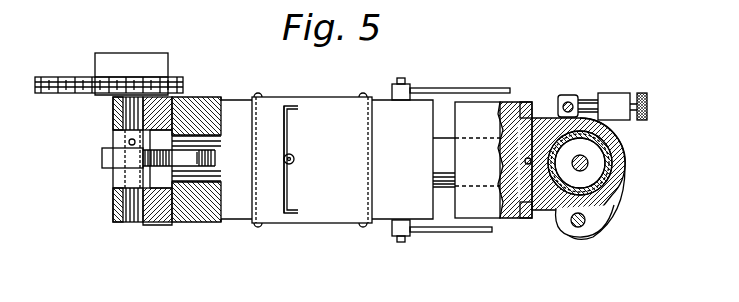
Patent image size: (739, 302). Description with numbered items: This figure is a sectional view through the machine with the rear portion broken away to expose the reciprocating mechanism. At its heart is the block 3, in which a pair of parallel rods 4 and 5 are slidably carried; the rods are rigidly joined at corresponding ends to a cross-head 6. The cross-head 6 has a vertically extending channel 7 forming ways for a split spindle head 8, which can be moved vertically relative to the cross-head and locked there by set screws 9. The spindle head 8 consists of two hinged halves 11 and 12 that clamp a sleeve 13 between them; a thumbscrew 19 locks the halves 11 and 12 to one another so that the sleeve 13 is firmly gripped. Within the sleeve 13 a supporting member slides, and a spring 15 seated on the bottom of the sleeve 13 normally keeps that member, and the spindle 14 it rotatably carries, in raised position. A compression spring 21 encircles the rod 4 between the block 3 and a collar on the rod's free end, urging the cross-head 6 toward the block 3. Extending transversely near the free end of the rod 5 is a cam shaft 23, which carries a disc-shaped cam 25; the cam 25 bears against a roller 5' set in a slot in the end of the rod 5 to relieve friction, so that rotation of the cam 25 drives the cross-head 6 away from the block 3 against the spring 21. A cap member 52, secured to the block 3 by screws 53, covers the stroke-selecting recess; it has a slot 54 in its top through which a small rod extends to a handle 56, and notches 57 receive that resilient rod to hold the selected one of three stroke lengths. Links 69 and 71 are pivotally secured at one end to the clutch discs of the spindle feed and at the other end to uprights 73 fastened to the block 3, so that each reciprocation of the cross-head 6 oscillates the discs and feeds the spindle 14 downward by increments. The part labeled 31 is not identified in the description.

The block 3 is at (230, 212).
The rod 4 is at (443, 190).
The rod 5 is at (196, 127).
The roller 5' is at (220, 151).
The cross-head 6 is at (516, 219).
The channel 7 is at (539, 210).
The split spindle head 8 is at (636, 180).
The set screws 9 is at (528, 102).
The hinged half 11 is at (566, 216).
The hinged half 12 is at (625, 146).
The sleeve 13 is at (622, 157).
The spindle 14 is at (584, 168).
The spring 15 is at (623, 192).
The thumbscrew 19 is at (647, 97).
The compression spring 21 is at (160, 224).
The cam shaft 23 is at (130, 222).
The disc-shaped cam 25 is at (106, 168).
The rack bar 31 is at (77, 77).
The cap member 52 is at (341, 222).
The screws 53 is at (259, 224).
The slot 54 is at (282, 122).
The handle 56 is at (294, 164).
The notches 57 is at (291, 105).
The link 69 is at (438, 233).
The link 71 is at (476, 88).
The uprights 73 is at (393, 90).